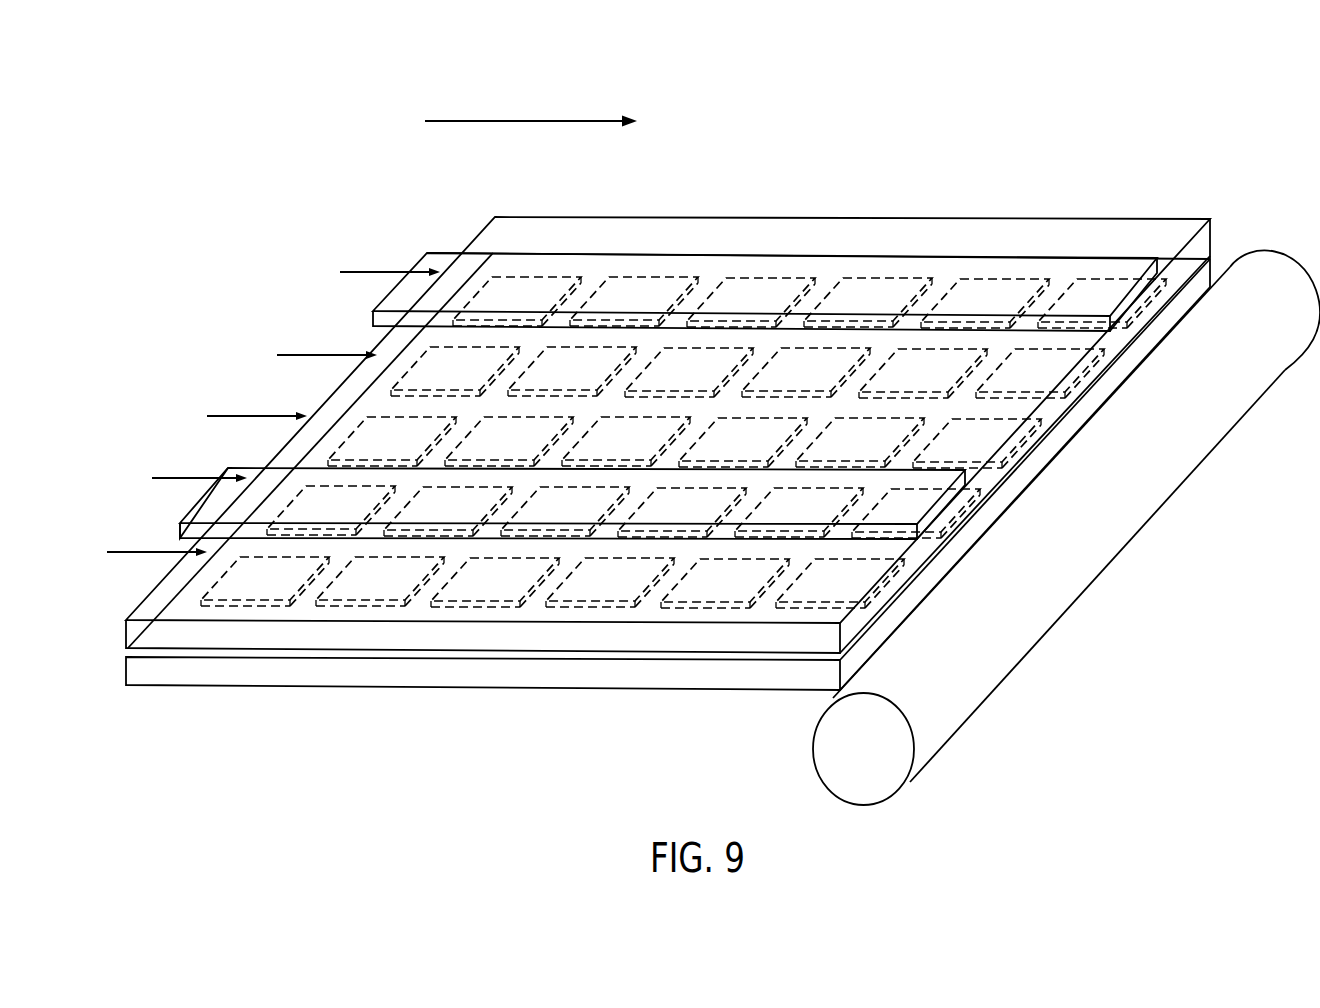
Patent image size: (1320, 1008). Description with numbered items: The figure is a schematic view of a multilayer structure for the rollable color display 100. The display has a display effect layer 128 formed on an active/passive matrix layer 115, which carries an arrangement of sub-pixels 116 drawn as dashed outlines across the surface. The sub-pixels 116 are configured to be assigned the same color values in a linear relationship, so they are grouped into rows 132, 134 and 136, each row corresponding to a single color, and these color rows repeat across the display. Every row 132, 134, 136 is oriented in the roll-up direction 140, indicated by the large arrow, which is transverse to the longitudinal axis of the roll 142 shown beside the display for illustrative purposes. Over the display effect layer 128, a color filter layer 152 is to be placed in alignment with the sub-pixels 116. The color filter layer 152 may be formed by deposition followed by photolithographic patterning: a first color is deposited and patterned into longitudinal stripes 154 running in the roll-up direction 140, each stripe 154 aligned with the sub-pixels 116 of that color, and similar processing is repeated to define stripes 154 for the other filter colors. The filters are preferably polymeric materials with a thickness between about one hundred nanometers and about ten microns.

The rollable color display 100 is at (1005, 180).
The active/passive matrix layer 115 is at (157, 677).
The sub-pixels 116 is at (487, 577).
The display effect layer 128 is at (125, 637).
The row 132 is at (362, 272).
The row 134 is at (343, 355).
The row 136 is at (240, 433).
The roll-up direction 140 is at (462, 120).
The roll 142 is at (1062, 590).
The color filter layer 152 is at (181, 522).
The longitudinal stripes 154 is at (377, 311).